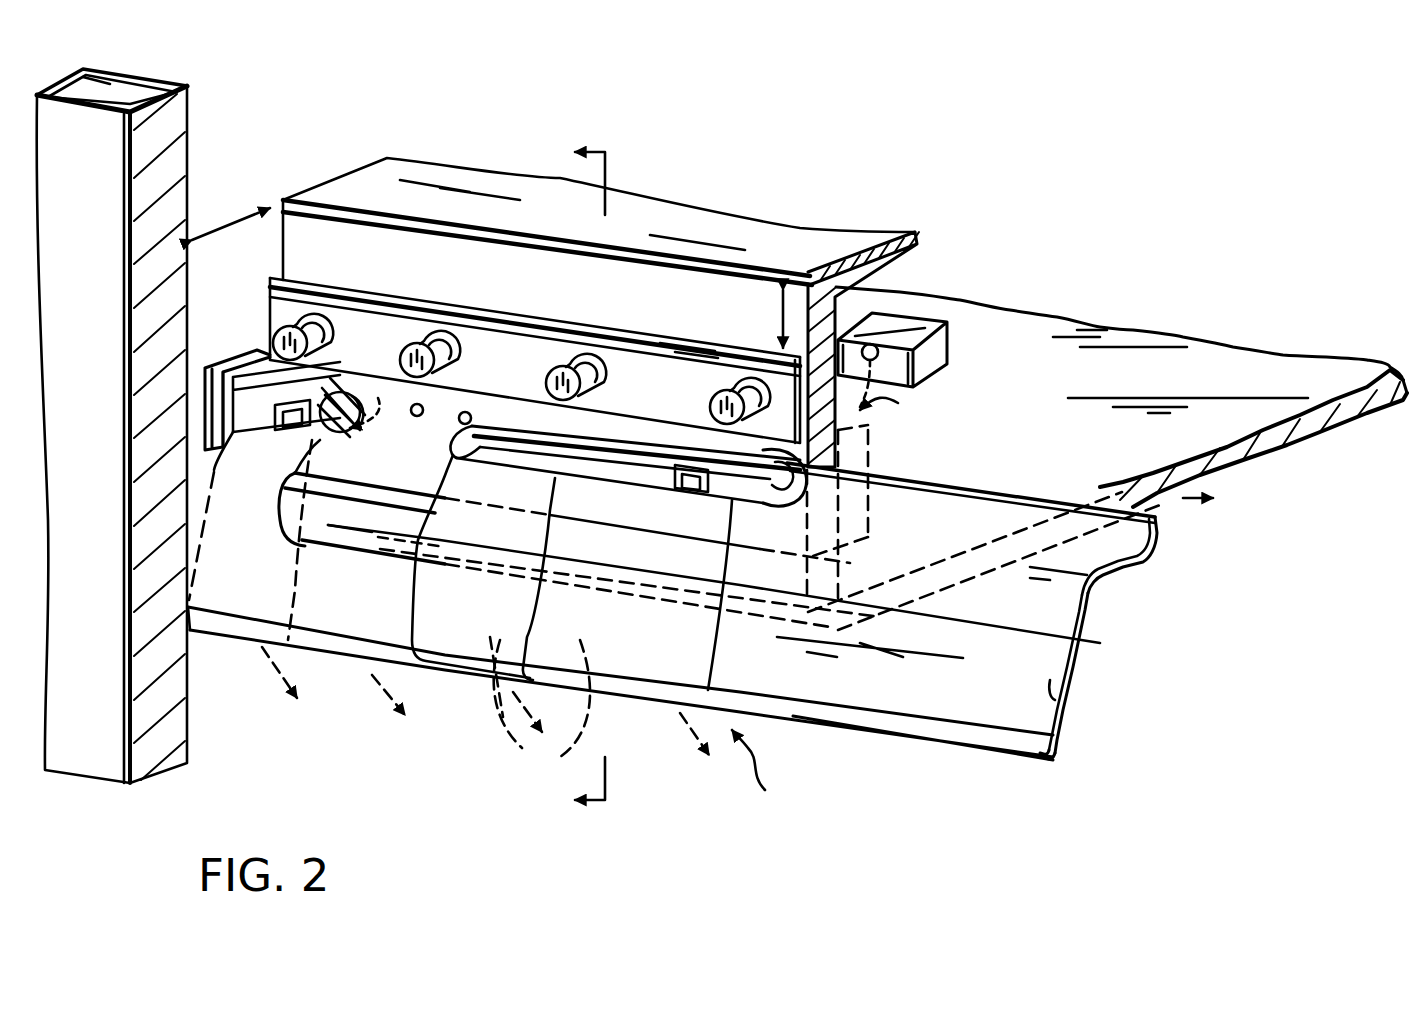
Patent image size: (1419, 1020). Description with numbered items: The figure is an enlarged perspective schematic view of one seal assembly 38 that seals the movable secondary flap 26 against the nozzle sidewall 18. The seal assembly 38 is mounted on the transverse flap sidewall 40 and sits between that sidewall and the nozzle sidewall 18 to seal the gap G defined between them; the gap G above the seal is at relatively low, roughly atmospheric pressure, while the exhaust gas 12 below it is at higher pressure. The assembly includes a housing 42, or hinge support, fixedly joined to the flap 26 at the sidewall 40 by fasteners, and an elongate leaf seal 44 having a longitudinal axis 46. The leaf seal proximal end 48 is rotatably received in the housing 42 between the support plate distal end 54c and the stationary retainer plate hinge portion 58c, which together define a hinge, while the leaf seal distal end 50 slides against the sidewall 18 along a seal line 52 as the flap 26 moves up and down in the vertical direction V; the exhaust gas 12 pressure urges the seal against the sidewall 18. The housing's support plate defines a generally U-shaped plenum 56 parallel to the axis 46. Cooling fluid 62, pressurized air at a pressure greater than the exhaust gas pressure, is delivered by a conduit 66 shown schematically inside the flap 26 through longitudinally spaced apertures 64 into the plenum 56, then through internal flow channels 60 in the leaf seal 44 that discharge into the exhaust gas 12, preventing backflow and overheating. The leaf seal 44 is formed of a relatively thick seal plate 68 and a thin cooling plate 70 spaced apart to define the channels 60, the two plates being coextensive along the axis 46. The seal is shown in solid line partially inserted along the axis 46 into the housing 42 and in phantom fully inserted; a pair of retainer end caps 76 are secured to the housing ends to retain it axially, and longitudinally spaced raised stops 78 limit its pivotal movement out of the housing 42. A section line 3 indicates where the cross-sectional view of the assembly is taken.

The exhaust gas 12 is at (1184, 499).
The nozzle sidewall 18 is at (172, 108).
The secondary flap 26 is at (707, 228).
The seal assembly 38 is at (762, 778).
The flap sidewall 40 is at (745, 283).
The housing 42 is at (386, 330).
The leaf seal 44 is at (1018, 760).
The longitudinal axis 46 is at (1100, 643).
The leaf seal proximal end 48 is at (937, 476).
The leaf seal distal end 50 is at (1060, 753).
The seal line 52 is at (447, 672).
The support plate distal end 54c is at (300, 542).
The plenum 56 is at (330, 385).
The retainer plate hinge portion 58c is at (438, 442).
The internal flow channels 60 is at (540, 704).
The cooling fluid 62 is at (508, 735).
The apertures 64 is at (422, 406).
The conduit 66 is at (945, 338).
The seal plate 68 is at (1067, 717).
The cooling plate 70 is at (1090, 592).
The retainer end caps 76 is at (248, 365).
The stops 78 is at (295, 440).
The section line 3- 3 is at (591, 484).
The gap G is at (205, 236).
The vertical direction V is at (778, 316).